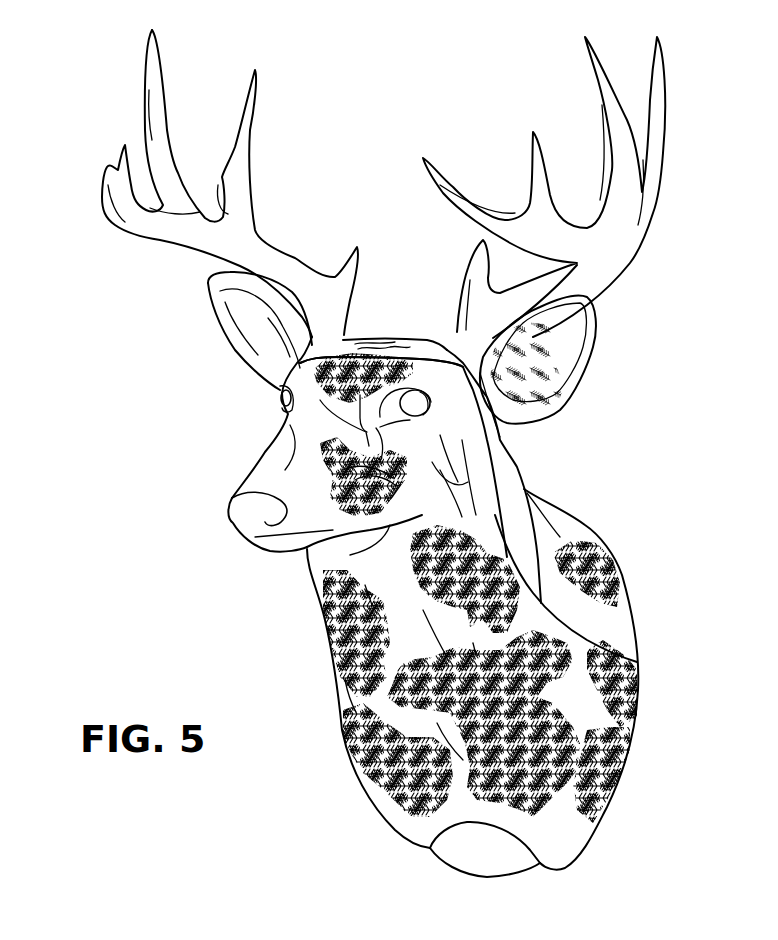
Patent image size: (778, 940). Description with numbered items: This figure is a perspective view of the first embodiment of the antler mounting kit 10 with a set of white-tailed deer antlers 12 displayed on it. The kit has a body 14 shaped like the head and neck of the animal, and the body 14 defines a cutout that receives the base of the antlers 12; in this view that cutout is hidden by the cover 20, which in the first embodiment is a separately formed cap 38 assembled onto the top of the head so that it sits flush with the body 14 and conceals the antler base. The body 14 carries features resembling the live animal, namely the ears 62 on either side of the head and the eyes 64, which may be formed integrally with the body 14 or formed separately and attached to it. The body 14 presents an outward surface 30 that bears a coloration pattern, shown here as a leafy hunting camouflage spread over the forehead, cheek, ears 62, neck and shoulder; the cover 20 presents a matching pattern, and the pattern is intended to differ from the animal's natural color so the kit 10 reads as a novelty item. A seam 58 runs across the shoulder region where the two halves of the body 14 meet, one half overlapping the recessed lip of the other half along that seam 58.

The antler mounting kit 10 is at (613, 521).
The antlers 12 is at (127, 223).
The body 14 is at (517, 467).
The cover 20 is at (417, 350).
The cap 38 is at (381, 362).
The outward surface 30 is at (340, 667).
The seam 58 is at (583, 633).
The ears 62 is at (213, 317).
The eyes 64 is at (281, 409).